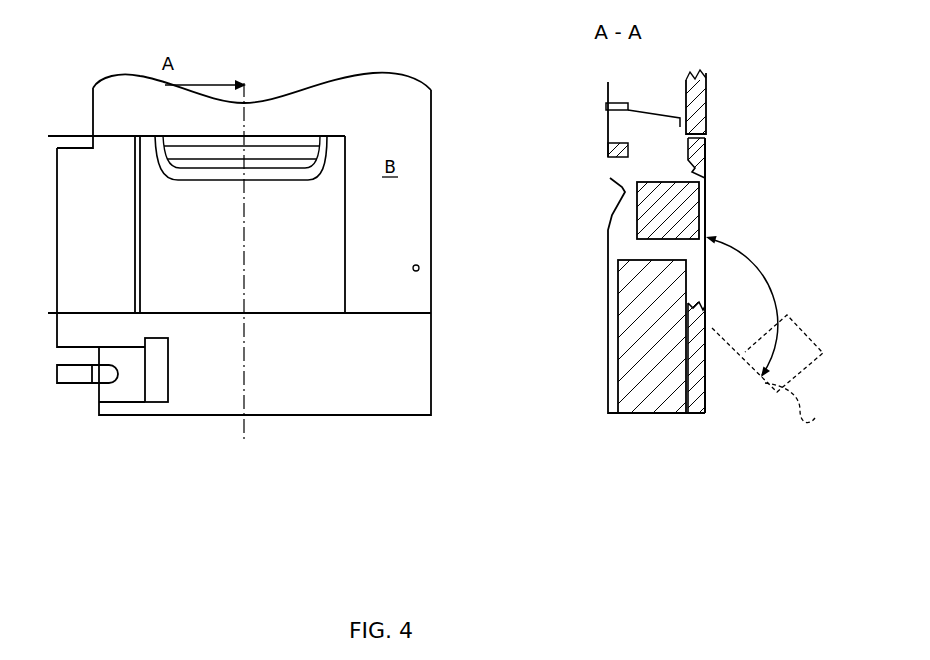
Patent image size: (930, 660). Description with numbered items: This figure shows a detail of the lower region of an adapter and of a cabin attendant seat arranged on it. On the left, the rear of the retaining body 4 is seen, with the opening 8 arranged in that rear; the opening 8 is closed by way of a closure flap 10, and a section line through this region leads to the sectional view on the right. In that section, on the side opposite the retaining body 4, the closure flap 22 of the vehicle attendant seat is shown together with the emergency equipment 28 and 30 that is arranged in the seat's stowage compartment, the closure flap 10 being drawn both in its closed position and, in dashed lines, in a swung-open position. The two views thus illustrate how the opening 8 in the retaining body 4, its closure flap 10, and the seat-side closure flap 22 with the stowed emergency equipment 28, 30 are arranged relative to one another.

The retaining body 4 is at (403, 121).
The opening 8 is at (128, 250).
The closure flap 10 is at (172, 245).
The closure flap 22 is at (597, 312).
The emergency equipment 28 is at (641, 394).
The emergency equipment 30 is at (650, 215).